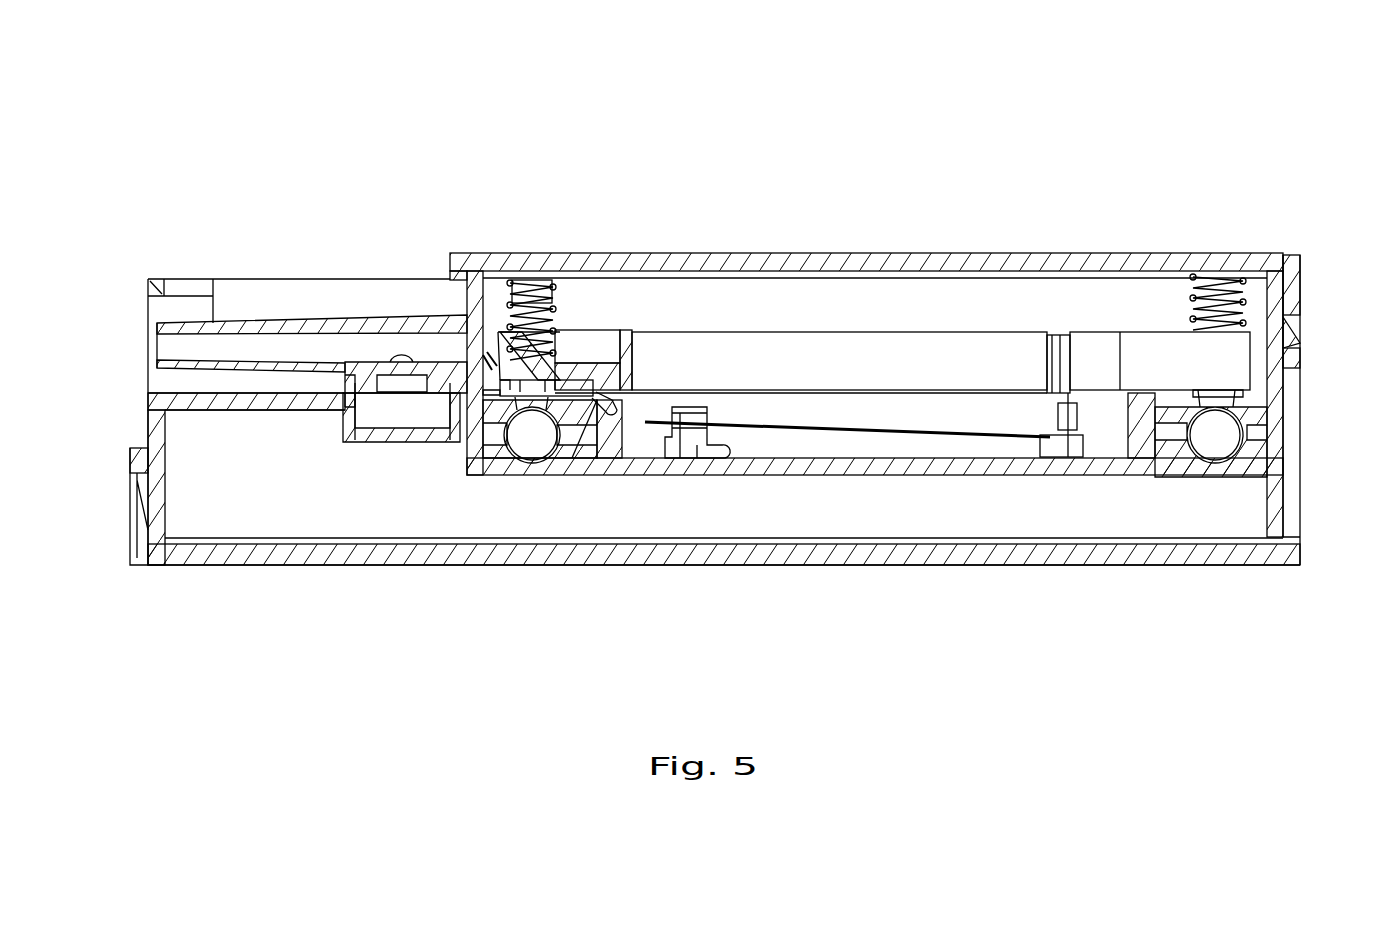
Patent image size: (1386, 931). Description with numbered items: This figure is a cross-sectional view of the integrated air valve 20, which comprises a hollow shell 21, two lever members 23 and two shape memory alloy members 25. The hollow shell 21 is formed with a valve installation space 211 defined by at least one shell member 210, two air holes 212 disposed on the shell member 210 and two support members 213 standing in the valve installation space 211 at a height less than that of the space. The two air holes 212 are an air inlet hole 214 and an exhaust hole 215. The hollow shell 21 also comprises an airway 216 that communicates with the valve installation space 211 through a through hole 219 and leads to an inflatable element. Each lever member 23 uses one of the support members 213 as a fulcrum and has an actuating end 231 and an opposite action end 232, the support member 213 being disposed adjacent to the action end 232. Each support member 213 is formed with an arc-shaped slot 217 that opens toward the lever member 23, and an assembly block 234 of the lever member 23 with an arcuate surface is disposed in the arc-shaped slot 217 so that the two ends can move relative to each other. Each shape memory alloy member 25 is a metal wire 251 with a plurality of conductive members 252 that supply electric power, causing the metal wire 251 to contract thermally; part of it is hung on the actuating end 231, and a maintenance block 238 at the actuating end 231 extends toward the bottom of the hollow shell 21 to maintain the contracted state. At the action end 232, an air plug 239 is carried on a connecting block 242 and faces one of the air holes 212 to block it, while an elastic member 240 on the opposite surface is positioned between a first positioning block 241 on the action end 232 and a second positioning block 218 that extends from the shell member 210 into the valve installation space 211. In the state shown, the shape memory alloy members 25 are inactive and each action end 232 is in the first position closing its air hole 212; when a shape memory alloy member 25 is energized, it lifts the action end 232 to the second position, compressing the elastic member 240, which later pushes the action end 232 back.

The integrated air valve 20 is at (1283, 111).
The hollow shell 21 is at (248, 278).
The through hole 219 is at (292, 340).
The airway 216 is at (383, 330).
The action end 232 is at (502, 370).
The elastic member 240 is at (520, 285).
The second positioning block 218 is at (540, 300).
The first positioning block 241 is at (558, 332).
The valve installation space 211 is at (722, 304).
The lever member 23 is at (822, 348).
The shell member 210 is at (905, 262).
The actuating end 231 is at (1050, 332).
The air plug 239 is at (510, 388).
The connecting block 242 is at (520, 400).
The air hole 212 is at (1213, 403).
The air inlet hole 214 is at (543, 408).
The exhaust hole 215 is at (1211, 433).
The support member 213 is at (600, 437).
The arc-shaped slot 217 is at (603, 400).
The assembly block 234 is at (593, 360).
The conductive member 252 is at (693, 420).
The metal wire 251 is at (810, 430).
The shape memory alloy member 25 is at (926, 441).
The maintenance block 238 is at (1056, 448).